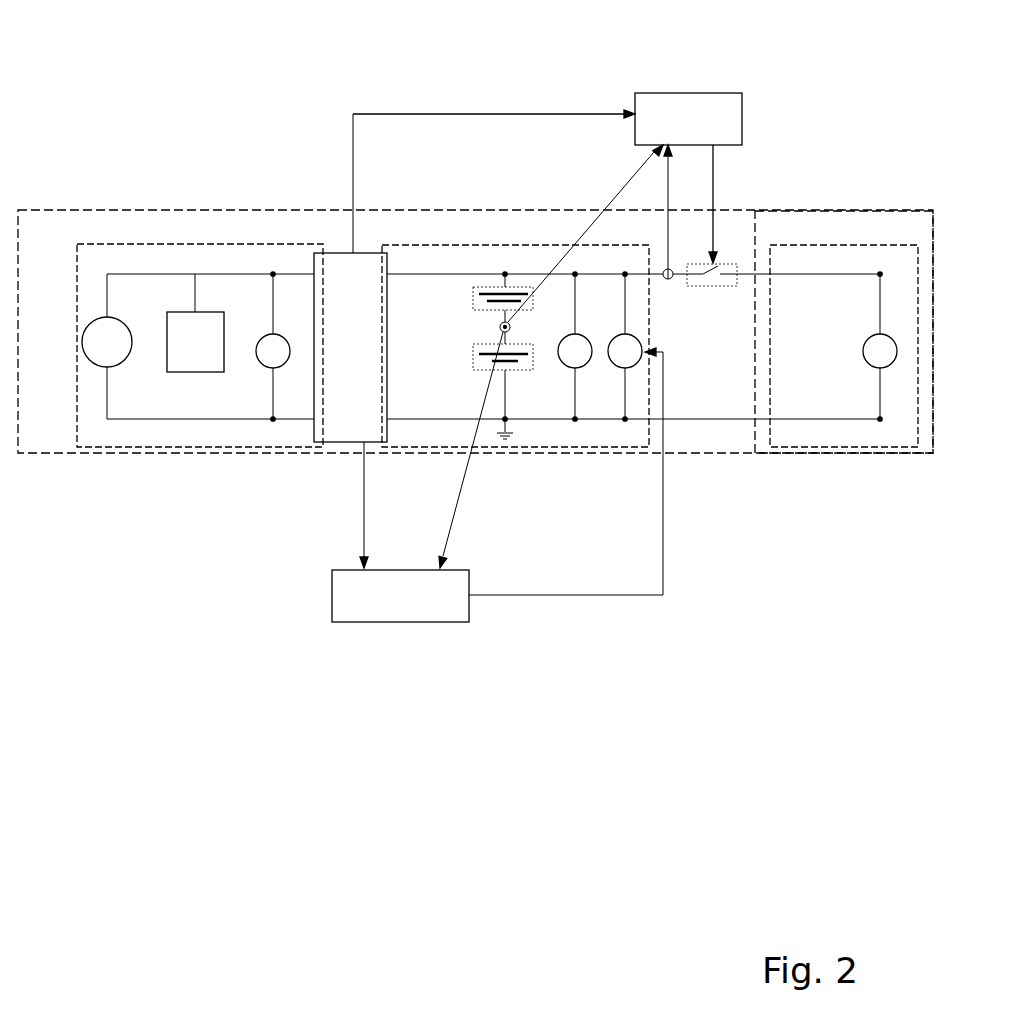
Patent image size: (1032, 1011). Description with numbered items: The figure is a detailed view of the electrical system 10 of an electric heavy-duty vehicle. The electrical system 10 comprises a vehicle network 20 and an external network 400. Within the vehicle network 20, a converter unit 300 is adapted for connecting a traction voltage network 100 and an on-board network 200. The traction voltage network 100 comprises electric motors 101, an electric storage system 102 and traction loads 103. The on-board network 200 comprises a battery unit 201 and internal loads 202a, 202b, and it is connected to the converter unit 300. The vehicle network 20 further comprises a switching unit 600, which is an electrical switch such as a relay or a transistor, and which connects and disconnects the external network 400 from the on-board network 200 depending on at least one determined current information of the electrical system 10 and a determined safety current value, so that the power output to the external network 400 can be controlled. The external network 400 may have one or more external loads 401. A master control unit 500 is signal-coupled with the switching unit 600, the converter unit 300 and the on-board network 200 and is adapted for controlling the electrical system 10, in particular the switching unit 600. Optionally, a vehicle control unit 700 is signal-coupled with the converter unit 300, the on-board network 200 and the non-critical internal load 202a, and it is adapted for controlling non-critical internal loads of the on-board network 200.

The electrical system 10 is at (265, 140).
The vehicle network 20 is at (475, 331).
The traction voltage network 100 is at (200, 345).
The electric motors 101 is at (107, 342).
The electric storage system 102 is at (187, 350).
The traction loads 103 is at (277, 357).
The on-board network 200 is at (631, 346).
The battery unit 201 is at (476, 316).
The non-critical internal load 202a is at (630, 357).
The internal load 202b is at (580, 357).
The converter unit 300 is at (350, 341).
The external network 400 is at (844, 332).
The external loads 401 is at (844, 346).
The master control unit 500 is at (547, 207).
The switching unit 600 is at (728, 262).
The vehicle control unit 700 is at (497, 477).